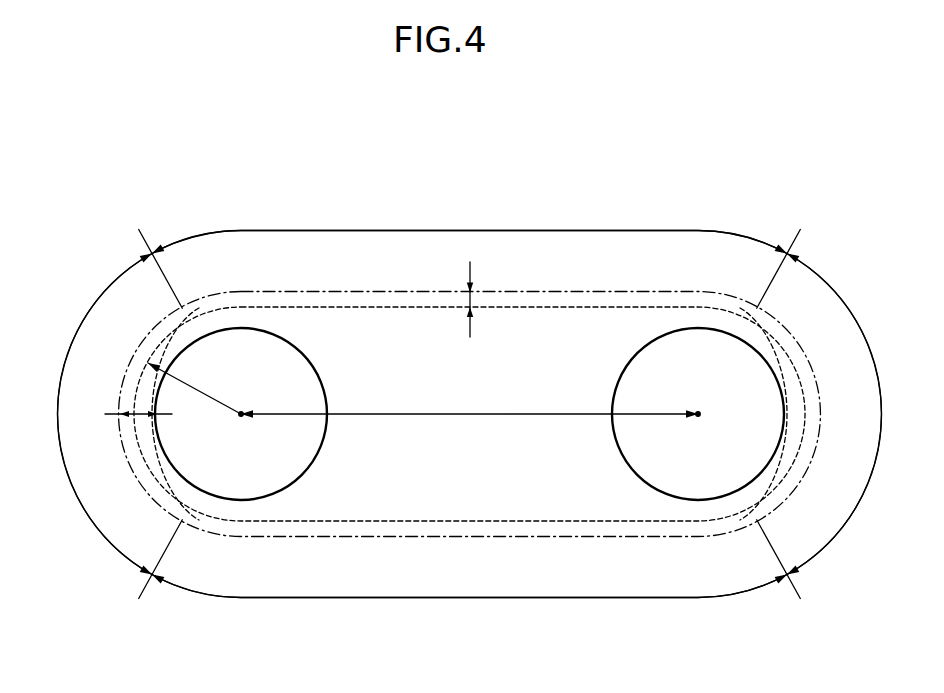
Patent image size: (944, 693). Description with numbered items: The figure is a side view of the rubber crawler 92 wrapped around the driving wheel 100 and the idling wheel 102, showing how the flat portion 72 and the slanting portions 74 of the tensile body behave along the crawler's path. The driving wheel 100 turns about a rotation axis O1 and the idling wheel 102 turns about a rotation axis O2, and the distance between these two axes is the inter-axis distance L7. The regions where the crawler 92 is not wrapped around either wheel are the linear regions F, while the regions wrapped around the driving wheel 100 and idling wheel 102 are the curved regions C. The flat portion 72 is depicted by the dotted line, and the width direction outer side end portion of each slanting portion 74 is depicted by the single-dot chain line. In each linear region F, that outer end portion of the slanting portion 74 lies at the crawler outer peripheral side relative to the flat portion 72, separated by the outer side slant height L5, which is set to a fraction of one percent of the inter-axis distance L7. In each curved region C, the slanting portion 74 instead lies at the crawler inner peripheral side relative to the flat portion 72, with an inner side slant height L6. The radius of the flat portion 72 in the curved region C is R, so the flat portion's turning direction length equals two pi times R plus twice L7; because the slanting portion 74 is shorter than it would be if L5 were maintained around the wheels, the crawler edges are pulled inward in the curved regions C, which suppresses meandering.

The rubber crawler 92 is at (60, 265).
The flat portion 72 is at (600, 307).
The slanting portion 74 is at (667, 292).
The driving wheel 100 is at (318, 365).
The idling wheel 102 is at (622, 373).
The linear region F is at (447, 230).
The curved region C is at (468, 414).
The outer side slant height L5 is at (472, 300).
The inner side slant height L6 is at (128, 420).
The inter-axis distance L7 is at (469, 400).
The radius of the flat portion R is at (194, 388).
The rotation axis of the driving wheel O1 is at (241, 419).
The rotation axis of the idling wheel O2 is at (698, 419).